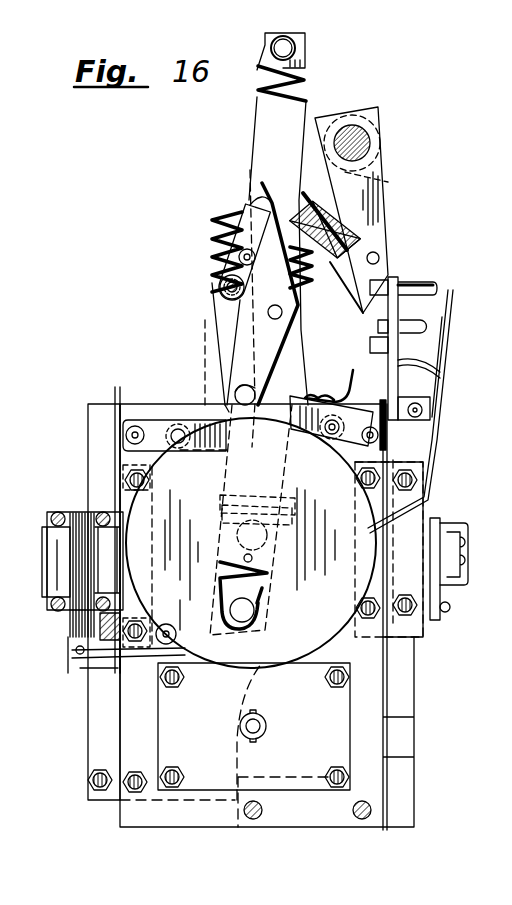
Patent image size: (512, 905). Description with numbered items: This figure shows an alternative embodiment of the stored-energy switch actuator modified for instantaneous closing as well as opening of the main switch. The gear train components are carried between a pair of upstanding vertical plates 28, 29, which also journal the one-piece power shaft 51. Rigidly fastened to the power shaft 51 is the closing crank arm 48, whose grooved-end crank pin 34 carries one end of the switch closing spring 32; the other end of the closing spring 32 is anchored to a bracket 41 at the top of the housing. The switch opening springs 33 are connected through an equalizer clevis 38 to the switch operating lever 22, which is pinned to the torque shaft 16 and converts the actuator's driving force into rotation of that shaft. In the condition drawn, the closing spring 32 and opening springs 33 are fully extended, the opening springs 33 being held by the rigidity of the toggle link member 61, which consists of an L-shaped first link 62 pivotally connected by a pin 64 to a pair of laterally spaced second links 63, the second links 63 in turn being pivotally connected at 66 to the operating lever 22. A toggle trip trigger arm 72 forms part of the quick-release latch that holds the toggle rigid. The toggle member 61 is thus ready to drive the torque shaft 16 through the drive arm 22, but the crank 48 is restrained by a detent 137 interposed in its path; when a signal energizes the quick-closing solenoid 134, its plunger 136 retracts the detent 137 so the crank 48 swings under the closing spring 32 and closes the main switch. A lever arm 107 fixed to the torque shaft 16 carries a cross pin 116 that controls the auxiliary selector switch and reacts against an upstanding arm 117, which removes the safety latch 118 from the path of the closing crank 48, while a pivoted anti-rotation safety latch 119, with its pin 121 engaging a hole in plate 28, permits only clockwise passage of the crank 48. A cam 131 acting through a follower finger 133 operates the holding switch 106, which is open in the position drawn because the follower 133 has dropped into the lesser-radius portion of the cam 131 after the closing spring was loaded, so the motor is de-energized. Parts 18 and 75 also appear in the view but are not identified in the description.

The torque shaft 16 is at (346, 125).
The link 18 is at (350, 300).
The switch operating lever 22 is at (325, 218).
The vertical plate 28 is at (294, 617).
The vertical plate 29 is at (104, 602).
The switch closing spring 32 is at (220, 578).
The switch opening springs 33 is at (210, 261).
The crank pin 34 is at (246, 618).
The equalizer clevis 38 is at (233, 214).
The bracket 41 is at (305, 49).
The crank arm 48 is at (265, 605).
The power shaft 51 is at (234, 528).
The toggle link member 61 is at (204, 341).
The first link 62 is at (222, 397).
The second link 63 is at (222, 308).
The pin 64 is at (243, 385).
The pivotal connection 66 is at (266, 200).
The toggle trip trigger arm 72 is at (243, 236).
The pin 75 is at (282, 316).
The lever arm 107 is at (376, 200).
The cross pin 116 is at (378, 254).
The upstanding arm 117 is at (347, 383).
The safety latch 118 is at (358, 428).
The anti-rotation safety latch 119 is at (160, 428).
The pin 121 is at (180, 442).
The cam 131 is at (251, 543).
The follower finger 133 is at (438, 458).
The quick-closing solenoid 134 is at (56, 556).
The plunger 136 is at (83, 628).
The detent 137 is at (160, 662).
The holding switch 106 is at (440, 278).